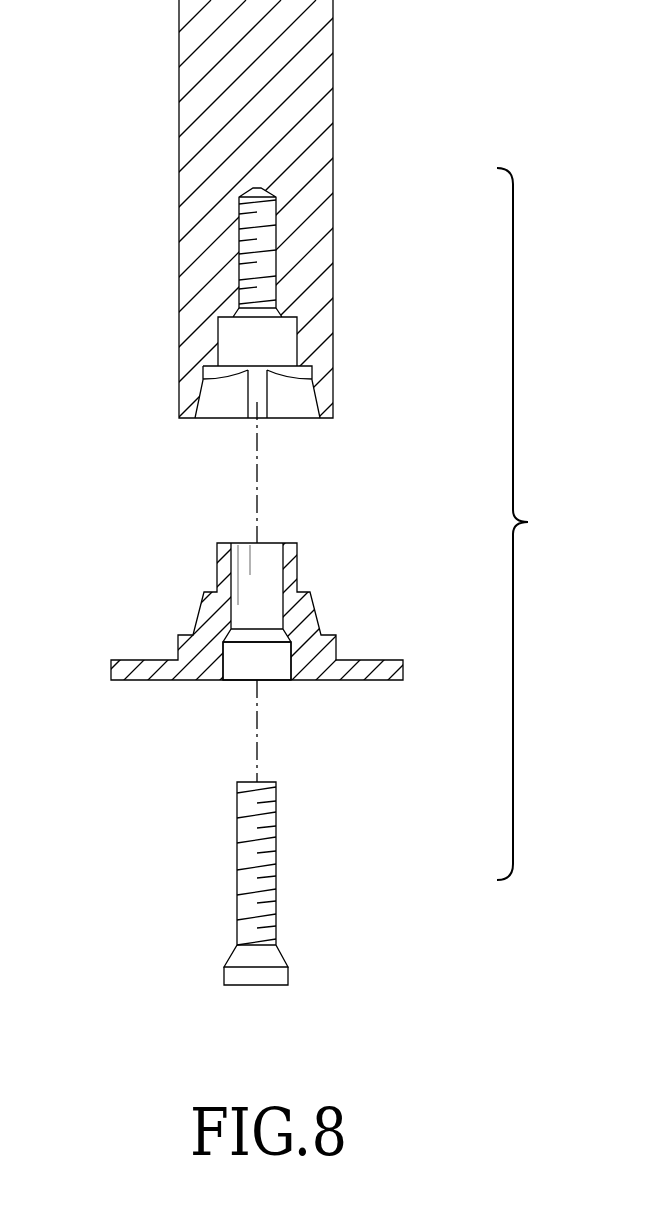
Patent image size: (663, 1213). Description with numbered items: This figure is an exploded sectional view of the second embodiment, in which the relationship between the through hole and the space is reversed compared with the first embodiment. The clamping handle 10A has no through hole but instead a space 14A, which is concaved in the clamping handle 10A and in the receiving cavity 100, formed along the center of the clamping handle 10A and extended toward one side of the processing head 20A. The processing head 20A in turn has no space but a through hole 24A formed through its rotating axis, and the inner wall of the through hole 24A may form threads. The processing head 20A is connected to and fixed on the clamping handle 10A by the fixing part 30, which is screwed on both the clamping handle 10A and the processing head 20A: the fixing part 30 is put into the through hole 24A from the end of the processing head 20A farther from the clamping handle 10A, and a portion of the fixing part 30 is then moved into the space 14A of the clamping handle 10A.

The clamping handle 10A is at (160, 78).
The space 14A is at (243, 270).
The receiving cavity 100 is at (307, 412).
The processing head 20A is at (349, 710).
The through hole 24A is at (233, 668).
The fixing part 30 is at (243, 832).